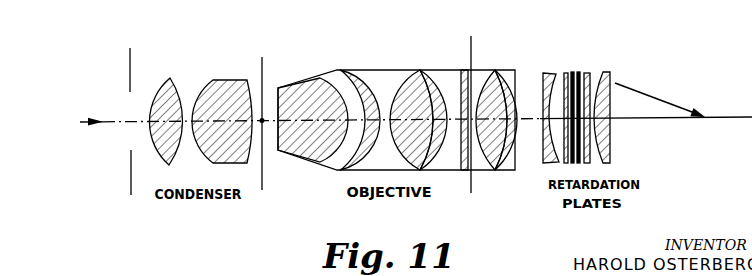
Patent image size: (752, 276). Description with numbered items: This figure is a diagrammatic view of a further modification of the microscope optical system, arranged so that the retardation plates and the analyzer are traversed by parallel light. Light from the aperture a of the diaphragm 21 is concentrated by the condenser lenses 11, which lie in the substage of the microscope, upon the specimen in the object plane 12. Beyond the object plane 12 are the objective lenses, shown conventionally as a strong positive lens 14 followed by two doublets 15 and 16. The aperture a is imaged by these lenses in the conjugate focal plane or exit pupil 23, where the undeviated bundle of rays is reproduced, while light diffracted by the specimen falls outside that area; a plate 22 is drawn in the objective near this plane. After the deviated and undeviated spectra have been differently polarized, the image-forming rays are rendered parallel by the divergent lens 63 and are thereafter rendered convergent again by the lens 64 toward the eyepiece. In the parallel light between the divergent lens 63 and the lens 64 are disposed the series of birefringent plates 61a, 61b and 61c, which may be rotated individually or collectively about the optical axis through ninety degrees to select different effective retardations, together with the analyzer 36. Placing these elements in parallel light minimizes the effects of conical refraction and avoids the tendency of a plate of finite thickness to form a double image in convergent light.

The diaphragm 21 is at (130, 48).
The condenser lenses 11 is at (213, 83).
The object plane 12 is at (262, 57).
The strong positive lens 14 is at (300, 82).
The doublet 15 is at (418, 69).
The phase plate 22 is at (461, 69).
The exit pupil 23 is at (471, 50).
The doublet 16 is at (497, 69).
The divergent lens 63 is at (544, 72).
The birefringent plate 61a is at (566, 72).
The birefringent plate 61b is at (573, 71).
The birefringent plate 61c is at (586, 72).
The analyzer 36 is at (600, 72).
The lens 64 is at (612, 72).